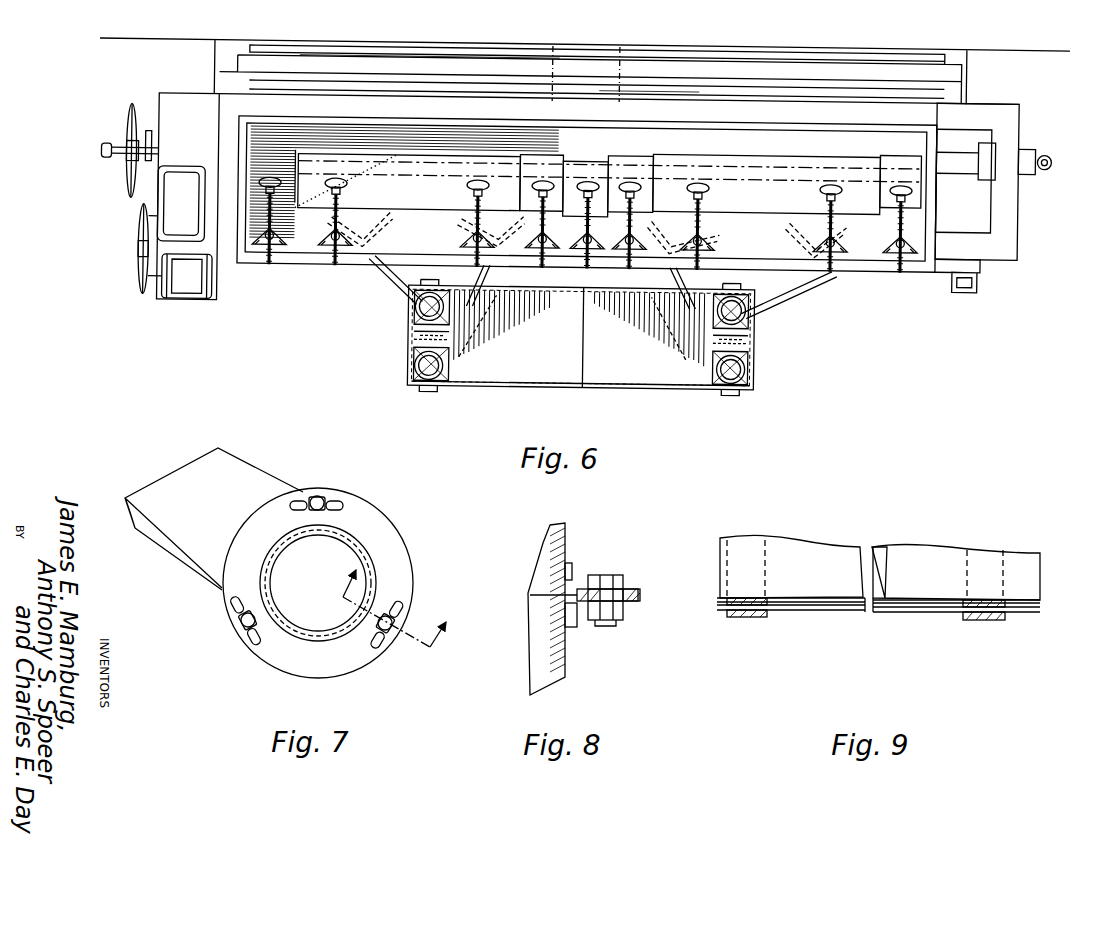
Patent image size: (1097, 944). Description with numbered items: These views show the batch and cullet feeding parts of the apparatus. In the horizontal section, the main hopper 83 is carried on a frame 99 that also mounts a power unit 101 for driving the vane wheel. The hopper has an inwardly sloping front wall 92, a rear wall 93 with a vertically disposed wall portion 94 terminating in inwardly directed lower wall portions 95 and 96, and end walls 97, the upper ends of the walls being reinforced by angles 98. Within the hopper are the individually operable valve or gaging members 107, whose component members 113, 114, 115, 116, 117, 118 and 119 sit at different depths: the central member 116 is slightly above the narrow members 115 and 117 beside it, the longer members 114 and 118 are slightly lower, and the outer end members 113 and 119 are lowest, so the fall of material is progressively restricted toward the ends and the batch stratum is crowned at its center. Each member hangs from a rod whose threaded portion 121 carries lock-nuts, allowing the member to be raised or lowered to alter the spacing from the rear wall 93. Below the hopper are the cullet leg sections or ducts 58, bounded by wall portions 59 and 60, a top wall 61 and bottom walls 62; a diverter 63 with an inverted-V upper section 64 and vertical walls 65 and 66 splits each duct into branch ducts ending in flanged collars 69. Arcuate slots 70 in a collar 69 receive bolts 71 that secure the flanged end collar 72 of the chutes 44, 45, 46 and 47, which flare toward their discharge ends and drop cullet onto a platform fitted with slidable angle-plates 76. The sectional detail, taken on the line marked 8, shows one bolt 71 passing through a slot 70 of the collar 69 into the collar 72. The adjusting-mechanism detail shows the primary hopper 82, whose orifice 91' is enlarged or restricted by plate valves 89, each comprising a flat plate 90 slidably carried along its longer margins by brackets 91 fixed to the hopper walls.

In FIG. 6, the frame 99 is at (243, 106).
In FIG. 6, the main hopper 83 is at (367, 125).
In FIG. 6, the rear wall 93 is at (460, 116).
In FIG. 6, the vertically disposed wall portion 94 is at (488, 120).
In FIG. 6, the lower wall portion 95 is at (574, 138).
In FIG. 6, the lower wall portion 96 is at (605, 158).
In FIG. 6, the end walls 97 is at (250, 141).
In FIG. 6, the valve member 113 is at (276, 152).
In FIG. 6, the valve member 114 is at (400, 172).
In FIG. 6, the valve member 115 is at (537, 168).
In FIG. 6, the central valve member 116 is at (590, 180).
In FIG. 6, the valve member 117 is at (627, 176).
In FIG. 6, the valve member 118 is at (735, 168).
In FIG. 6, the valve member 119 is at (905, 163).
In FIG. 6, the angles 98 is at (930, 150).
In FIG. 6, the valve or gaging members 107 is at (487, 166).
In FIG. 6, the angle-plates 76 is at (467, 223).
In FIG. 6, the power unit 101 is at (180, 270).
In FIG. 6, the threaded portion 121 is at (272, 262).
In FIG. 6, the front wall 92 is at (305, 262).
In FIG. 6, the chute 44 is at (400, 282).
In FIG. 6, the chute 45 is at (473, 284).
In FIG. 6, the chute 46 is at (700, 281).
In FIG. 6, the chute 47 is at (777, 276).
In FIG. 6, the wall 66 is at (416, 320).
In FIG. 6, the top wall 61 is at (417, 330).
In FIG. 6, the upper section 64 is at (418, 340).
In FIG. 6, the diverter 63 is at (418, 352).
In FIG. 6, the flanged collar 69 is at (433, 383).
In FIG. 7, the flanged collar 69 is at (388, 547).
In FIG. 8, the flanged collar 69 is at (640, 592).
In FIG. 6, the wall portion 60 is at (540, 297).
In FIG. 6, the wall 65 is at (463, 352).
In FIG. 6, the leg section or duct 58 is at (515, 357).
In FIG. 6, the wall portion 59 is at (535, 383).
In FIG. 6, the bottom wall 62 is at (610, 358).
In FIG. 7, the bolt 71 is at (317, 496).
In FIG. 8, the bolt 71 is at (605, 574).
In FIG. 7, the slot 70 is at (340, 501).
In FIG. 8, the slot 70 is at (625, 588).
In FIG. 7, the section line 8 is at (327, 589).
In FIG. 8, the flanged end collar 72 is at (634, 604).
In FIG. 9, the primary hopper 82 is at (826, 556).
In FIG. 9, the orifice 91' is at (874, 550).
In FIG. 9, the bracket 91 is at (866, 623).
In FIG. 9, the plate 90 is at (826, 612).
In FIG. 9, the plate-type valve 89 is at (879, 616).